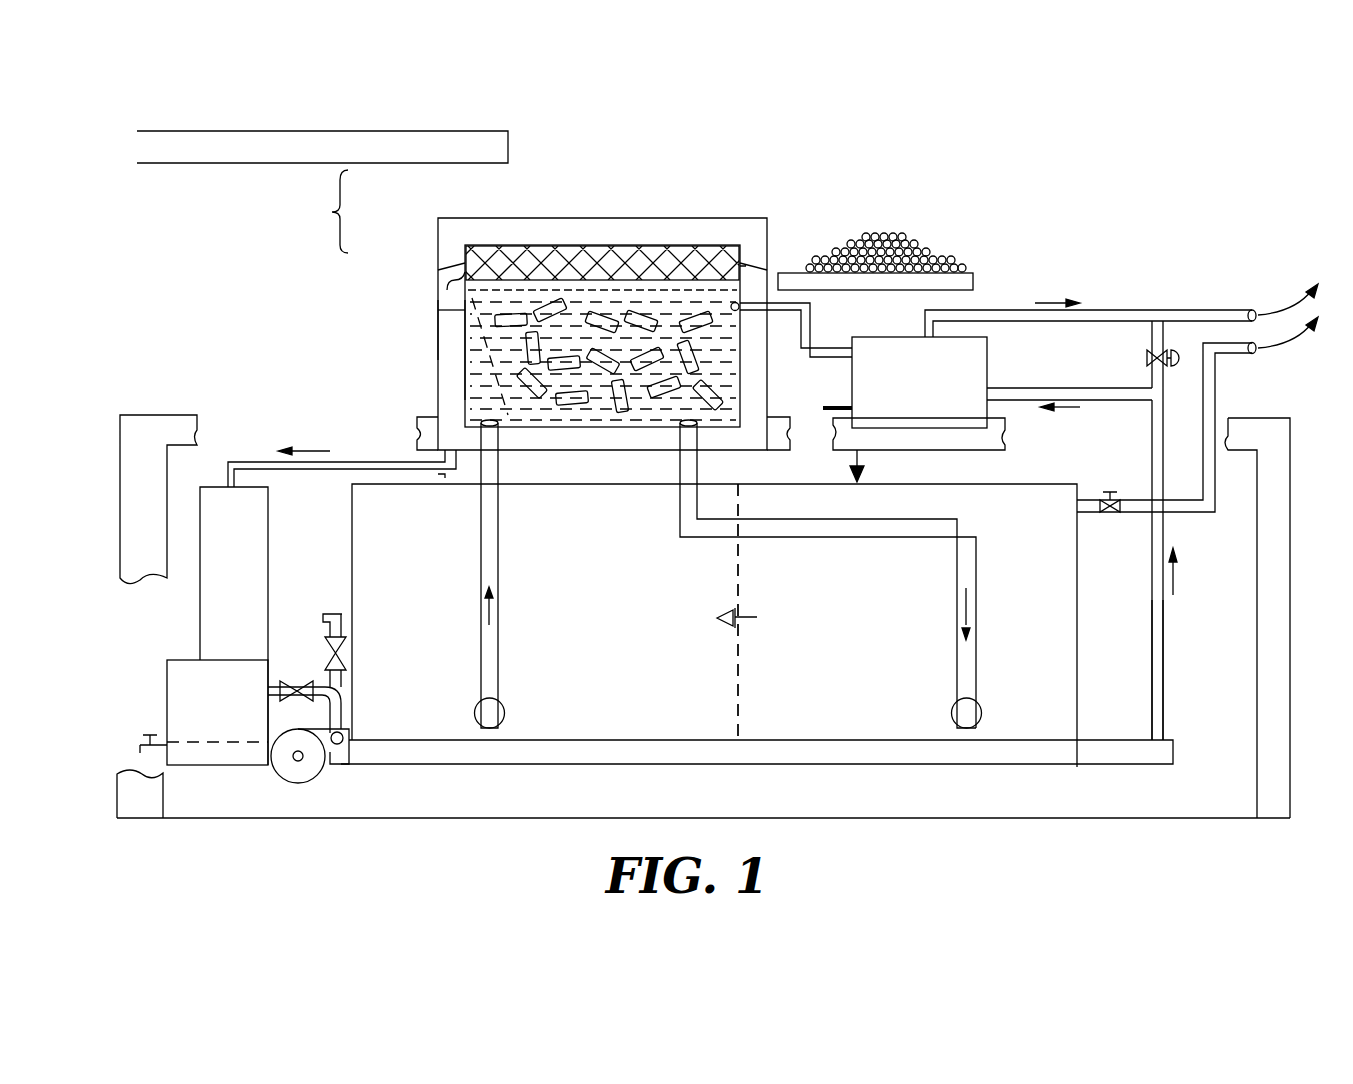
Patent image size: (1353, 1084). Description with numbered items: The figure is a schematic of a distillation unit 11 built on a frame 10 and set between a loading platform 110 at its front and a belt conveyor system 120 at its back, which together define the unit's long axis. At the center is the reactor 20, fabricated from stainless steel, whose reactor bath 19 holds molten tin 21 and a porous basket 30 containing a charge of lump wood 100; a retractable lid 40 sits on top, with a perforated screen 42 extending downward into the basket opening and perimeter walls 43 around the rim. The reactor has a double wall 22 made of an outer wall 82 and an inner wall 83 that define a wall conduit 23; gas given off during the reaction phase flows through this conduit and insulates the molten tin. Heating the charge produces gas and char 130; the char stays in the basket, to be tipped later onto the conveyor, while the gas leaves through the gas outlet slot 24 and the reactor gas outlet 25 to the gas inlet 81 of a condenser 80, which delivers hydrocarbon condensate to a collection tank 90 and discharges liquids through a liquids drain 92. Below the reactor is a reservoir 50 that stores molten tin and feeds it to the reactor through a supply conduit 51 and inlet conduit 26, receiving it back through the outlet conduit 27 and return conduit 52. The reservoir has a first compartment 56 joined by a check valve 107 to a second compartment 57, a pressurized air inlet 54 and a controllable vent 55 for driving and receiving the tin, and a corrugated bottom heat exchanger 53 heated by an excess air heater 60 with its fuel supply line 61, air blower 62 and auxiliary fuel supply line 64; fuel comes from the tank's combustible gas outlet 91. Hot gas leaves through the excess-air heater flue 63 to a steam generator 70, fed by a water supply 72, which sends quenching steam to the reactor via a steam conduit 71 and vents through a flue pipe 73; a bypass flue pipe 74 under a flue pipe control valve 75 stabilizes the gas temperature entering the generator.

The frame 10 is at (1002, 466).
The distillation unit 11 is at (664, 182).
The reactor bath 19 is at (438, 275).
The reactor 20 is at (324, 211).
The molten tin 21 is at (487, 395).
The double wall 22 is at (437, 326).
The wall conduit 23 is at (455, 368).
The gas outlet slot 24 is at (438, 290).
The reactor gas outlet 25 is at (456, 476).
The inlet conduit 26 is at (500, 470).
The outlet conduit 27 is at (698, 470).
The porous basket 30 is at (437, 318).
The retractable lid 40 is at (478, 218).
The perforated screen 42 is at (565, 260).
The perimeter walls 43 is at (757, 262).
The reservoir 50 is at (352, 506).
The supply conduit 51 is at (505, 716).
The return conduit 52 is at (951, 716).
The corrugated bottom heat exchanger 53 is at (600, 748).
The pressurized air inlet 54 is at (862, 462).
The controllable vent 55 is at (1233, 354).
The first compartment 56 is at (650, 612).
The second compartment 57 is at (807, 612).
The excess air heater 60 is at (340, 752).
The fuel supply line 61 is at (341, 714).
The air blower 62 is at (305, 783).
The excess-air heater flue 63 is at (1163, 688).
The auxiliary fuel supply line 64 is at (326, 613).
The steam generator 70 is at (919, 382).
The steam conduit 71 is at (811, 330).
The water supply 72 is at (835, 406).
The flue pipe 73 is at (1231, 310).
The bypass flue pipe 74 is at (1151, 378).
The flue pipe control valve 75 is at (1181, 366).
The condenser 80 is at (200, 506).
The gas inlet 81 is at (231, 462).
The outer wall 82 is at (437, 340).
The inner wall 83 is at (465, 355).
The collection tank 90 is at (167, 690).
The combustible gas outlet 91 is at (290, 682).
The liquids drain 92 is at (150, 733).
The lump wood 100 is at (665, 393).
The check valve 107 is at (718, 617).
The loading platform 110 is at (287, 130).
The belt conveyor system 120 is at (975, 283).
The char 130 is at (947, 250).